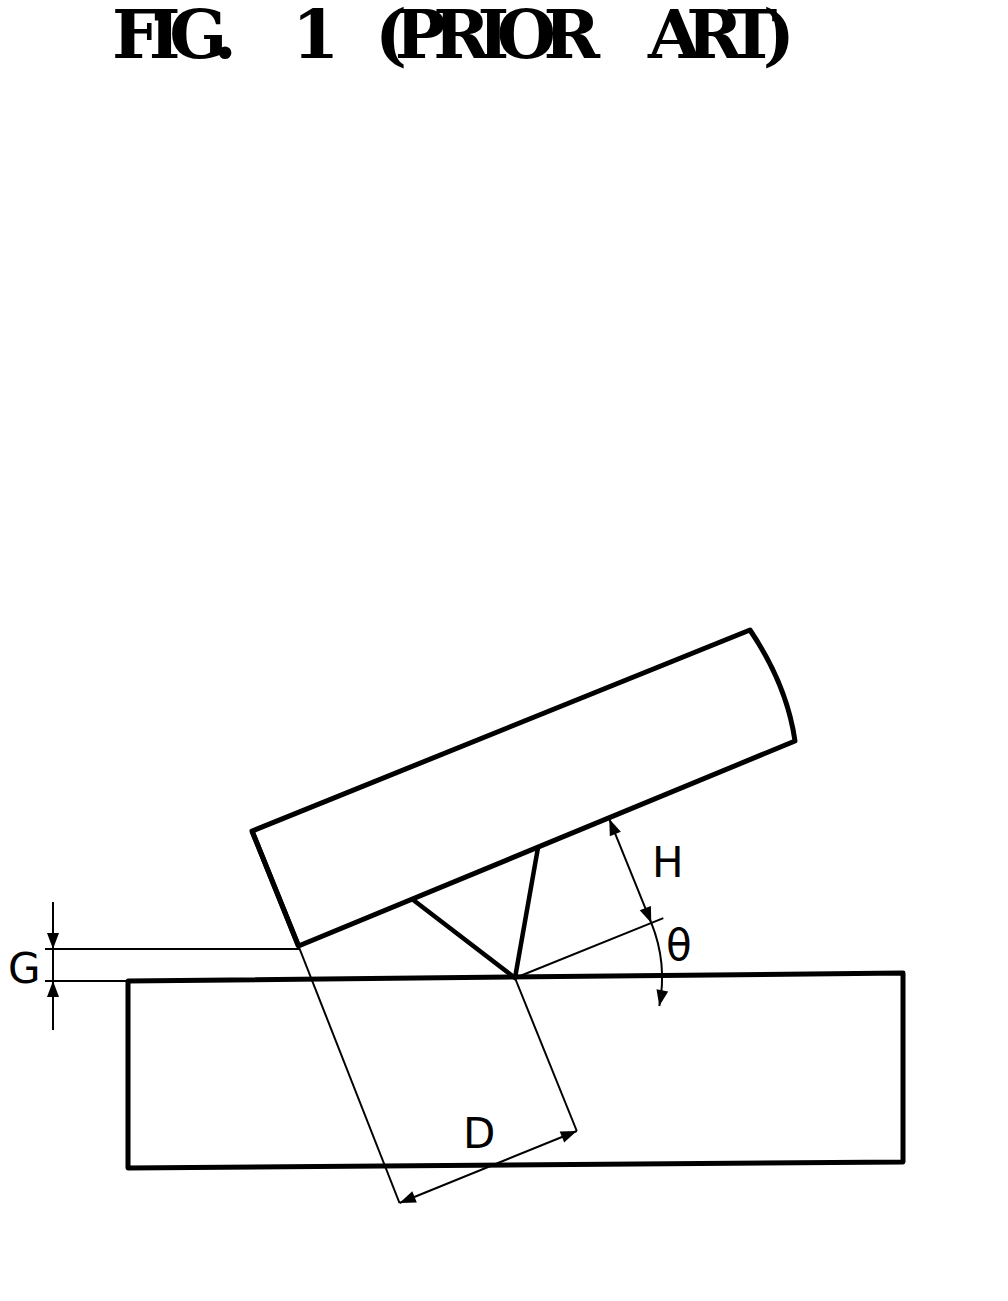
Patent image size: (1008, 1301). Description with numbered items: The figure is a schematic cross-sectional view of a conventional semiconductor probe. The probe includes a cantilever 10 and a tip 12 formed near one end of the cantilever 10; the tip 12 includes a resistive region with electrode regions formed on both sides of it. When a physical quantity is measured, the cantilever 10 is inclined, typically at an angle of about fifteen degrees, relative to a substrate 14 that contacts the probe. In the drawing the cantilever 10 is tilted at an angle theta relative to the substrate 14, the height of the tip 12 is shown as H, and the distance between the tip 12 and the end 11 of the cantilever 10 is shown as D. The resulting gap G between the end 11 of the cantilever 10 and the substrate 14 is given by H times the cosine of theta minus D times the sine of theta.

The cantilever 10 is at (577, 700).
The end of the cantilever 11 is at (262, 919).
The tip 12 is at (462, 898).
The substrate 14 is at (695, 1163).